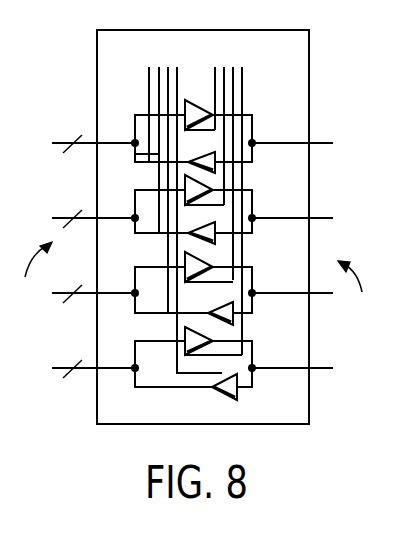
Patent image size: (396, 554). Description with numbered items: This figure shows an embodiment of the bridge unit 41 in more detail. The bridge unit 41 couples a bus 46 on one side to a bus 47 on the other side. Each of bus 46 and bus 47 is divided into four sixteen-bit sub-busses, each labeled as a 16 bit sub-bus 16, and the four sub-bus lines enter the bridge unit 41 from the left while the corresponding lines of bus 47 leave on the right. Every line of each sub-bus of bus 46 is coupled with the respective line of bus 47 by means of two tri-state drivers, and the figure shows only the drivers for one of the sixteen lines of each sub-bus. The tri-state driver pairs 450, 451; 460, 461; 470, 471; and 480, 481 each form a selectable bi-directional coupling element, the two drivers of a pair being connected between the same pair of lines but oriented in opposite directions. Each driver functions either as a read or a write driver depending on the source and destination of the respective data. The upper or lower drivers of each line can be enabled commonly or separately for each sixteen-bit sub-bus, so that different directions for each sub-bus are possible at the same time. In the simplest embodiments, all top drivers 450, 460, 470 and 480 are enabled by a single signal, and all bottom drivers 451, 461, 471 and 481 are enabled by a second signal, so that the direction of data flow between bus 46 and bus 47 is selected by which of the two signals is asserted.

The bridge unit 41 is at (290, 83).
The 16 bit sub-bus 16 is at (93, 244).
The bus 46 is at (34, 275).
The bus 47 is at (355, 292).
The tri-state driver 450 is at (203, 99).
The tri-state driver 451 is at (184, 179).
The tri-state driver 460 is at (218, 170).
The tri-state driver 461 is at (217, 243).
The tri-state driver 470 is at (184, 256).
The tri-state driver 471 is at (238, 318).
The tri-state driver 480 is at (183, 333).
The tri-state driver 481 is at (222, 392).